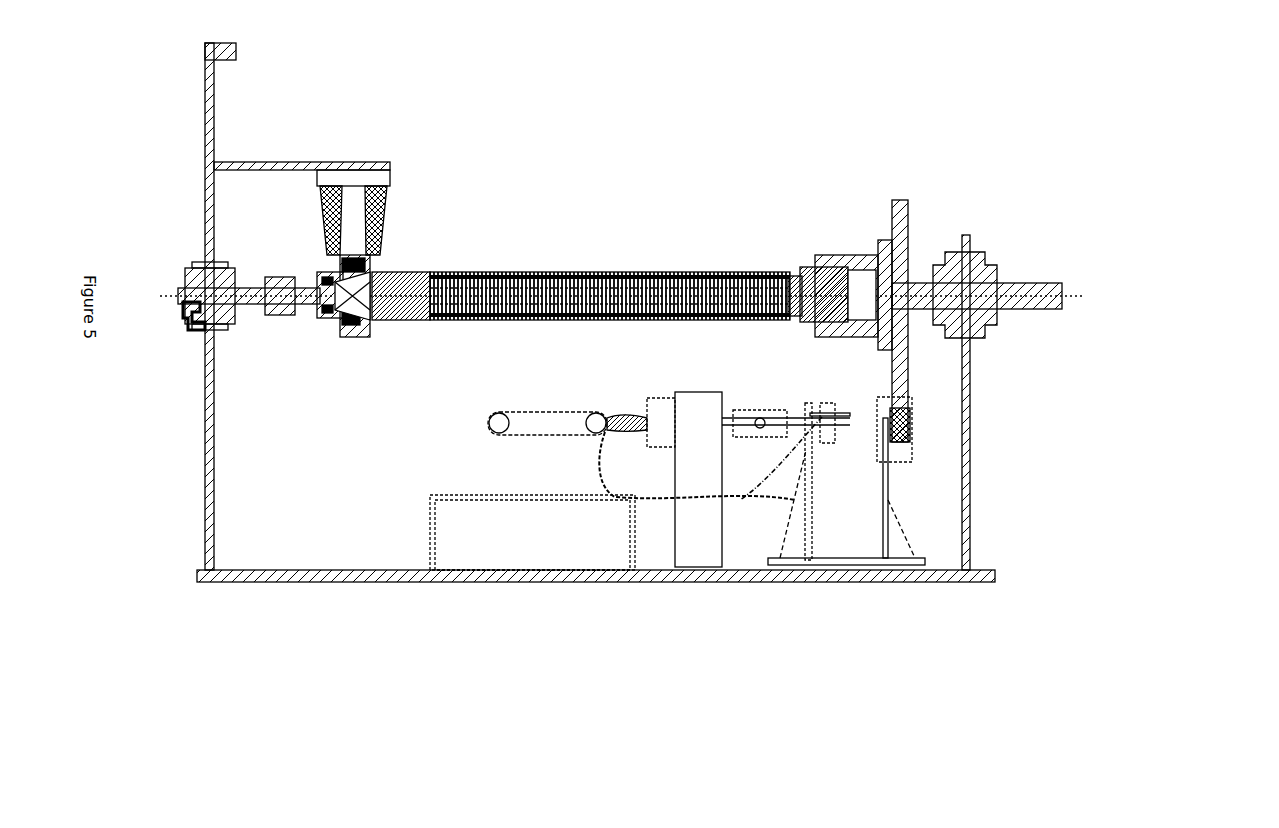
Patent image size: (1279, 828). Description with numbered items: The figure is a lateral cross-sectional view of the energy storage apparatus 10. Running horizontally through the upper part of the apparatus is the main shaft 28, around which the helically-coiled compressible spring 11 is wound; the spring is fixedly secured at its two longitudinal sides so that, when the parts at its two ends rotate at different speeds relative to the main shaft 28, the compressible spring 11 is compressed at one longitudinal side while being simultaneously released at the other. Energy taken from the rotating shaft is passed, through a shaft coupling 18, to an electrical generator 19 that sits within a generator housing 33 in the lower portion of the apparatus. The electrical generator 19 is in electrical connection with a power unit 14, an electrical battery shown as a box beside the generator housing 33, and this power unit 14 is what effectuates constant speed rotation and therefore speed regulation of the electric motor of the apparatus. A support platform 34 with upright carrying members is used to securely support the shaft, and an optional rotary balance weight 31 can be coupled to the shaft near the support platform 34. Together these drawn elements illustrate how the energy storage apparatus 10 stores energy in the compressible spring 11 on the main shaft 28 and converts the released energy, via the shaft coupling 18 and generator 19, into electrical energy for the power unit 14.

The energy storage apparatus 10 is at (1152, 257).
The compressible spring 11 is at (535, 274).
The main shaft 28 is at (652, 298).
The power unit 14 is at (557, 532).
The generator 19 is at (662, 430).
The generator housing 33 is at (687, 540).
The shaft coupling 18 is at (767, 437).
The rotary balance weight 31 is at (827, 430).
The support platform 34 is at (868, 560).